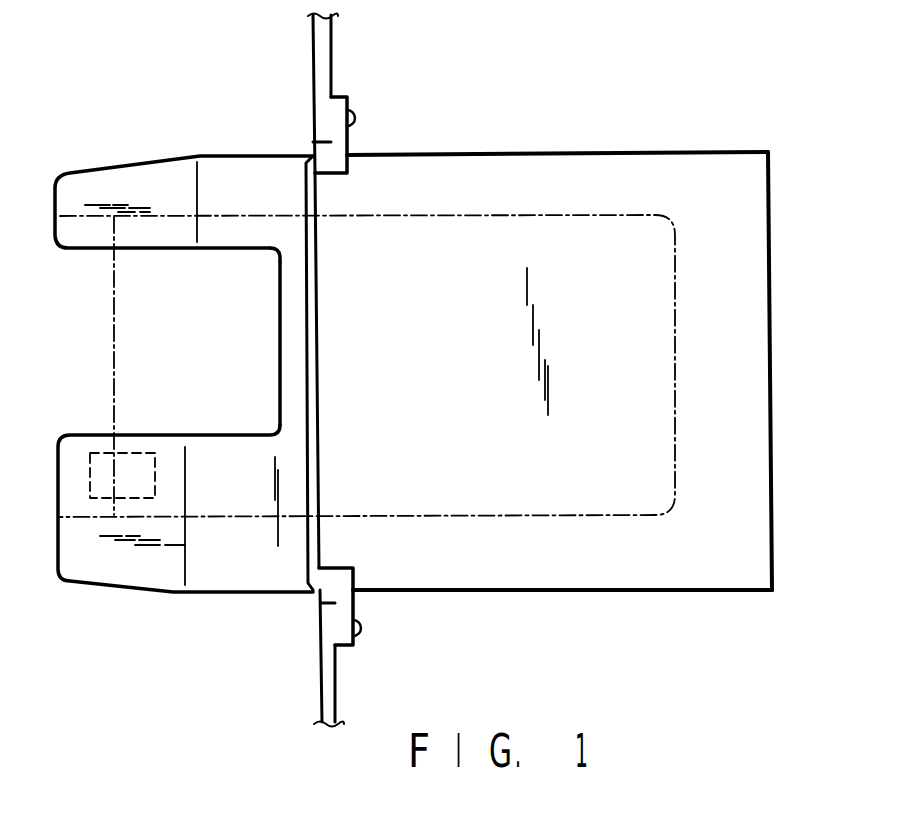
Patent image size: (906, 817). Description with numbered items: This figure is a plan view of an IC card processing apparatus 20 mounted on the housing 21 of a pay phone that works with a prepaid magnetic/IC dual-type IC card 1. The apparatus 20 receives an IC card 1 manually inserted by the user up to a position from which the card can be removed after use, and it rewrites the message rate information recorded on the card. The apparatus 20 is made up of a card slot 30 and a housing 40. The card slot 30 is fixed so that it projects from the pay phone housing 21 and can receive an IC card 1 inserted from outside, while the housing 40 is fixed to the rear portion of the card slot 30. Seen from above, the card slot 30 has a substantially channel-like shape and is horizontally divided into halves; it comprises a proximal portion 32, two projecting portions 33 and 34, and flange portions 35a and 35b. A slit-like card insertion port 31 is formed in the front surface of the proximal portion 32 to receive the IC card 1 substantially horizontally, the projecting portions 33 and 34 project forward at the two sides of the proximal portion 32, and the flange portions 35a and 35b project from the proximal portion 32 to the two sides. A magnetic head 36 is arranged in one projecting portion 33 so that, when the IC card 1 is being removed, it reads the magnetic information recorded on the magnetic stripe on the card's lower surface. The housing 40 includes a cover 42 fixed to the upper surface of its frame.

The IC card 1 is at (123, 325).
The IC card processing apparatus 20 is at (571, 142).
The housing of the pay phone 21 is at (330, 58).
The card slot 30 is at (135, 602).
The card insertion port 31 is at (280, 352).
The proximal portion 32 is at (278, 275).
The projecting portion 33 is at (214, 578).
The projecting portion 34 is at (105, 187).
The flange portion 35a is at (343, 143).
The flange portion 35b is at (357, 602).
The magnetic head 36 is at (157, 478).
The housing 40 is at (632, 601).
The cover 42 is at (762, 460).